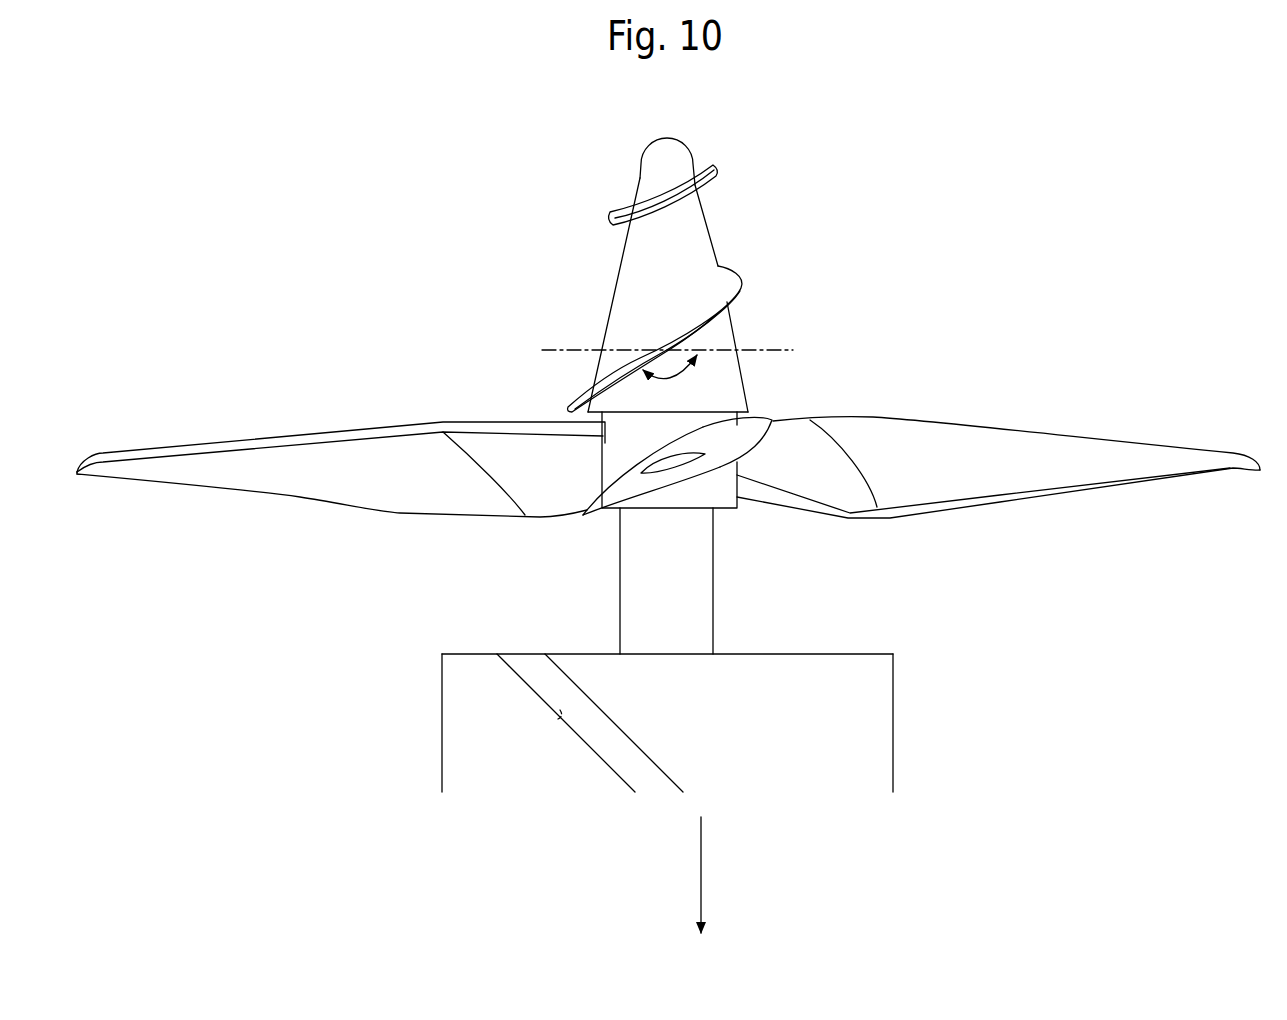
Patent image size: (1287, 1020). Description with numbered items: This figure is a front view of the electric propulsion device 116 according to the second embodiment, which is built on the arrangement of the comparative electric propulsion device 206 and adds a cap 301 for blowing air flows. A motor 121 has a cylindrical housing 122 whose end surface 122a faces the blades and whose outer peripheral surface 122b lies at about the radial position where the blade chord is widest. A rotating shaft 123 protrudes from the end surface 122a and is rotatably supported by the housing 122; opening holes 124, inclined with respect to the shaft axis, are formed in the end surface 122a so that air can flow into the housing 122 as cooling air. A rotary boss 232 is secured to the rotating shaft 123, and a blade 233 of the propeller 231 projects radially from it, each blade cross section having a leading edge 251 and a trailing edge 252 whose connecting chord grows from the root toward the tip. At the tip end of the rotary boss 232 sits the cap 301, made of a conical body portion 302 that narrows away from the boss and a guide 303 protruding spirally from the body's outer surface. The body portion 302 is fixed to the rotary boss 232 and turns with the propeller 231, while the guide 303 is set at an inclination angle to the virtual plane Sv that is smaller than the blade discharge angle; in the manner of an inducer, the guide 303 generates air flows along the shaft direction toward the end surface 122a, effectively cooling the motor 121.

The electric propulsion device 116 is at (908, 232).
The motor 121 is at (882, 652).
The housing 122 is at (830, 693).
The end surface 122a is at (470, 653).
The outer peripheral surface 122b is at (440, 680).
The rotating shaft 123 is at (690, 582).
The opening holes 124 is at (560, 710).
The electric propulsion device 206 is at (930, 367).
The propeller 231 is at (1100, 437).
The rotary boss 232 is at (692, 497).
The blade 233 is at (993, 443).
The leading edge 251 is at (780, 420).
The trailing edge 252 is at (588, 507).
The cap 301 is at (636, 177).
The body portion 302 is at (637, 293).
The guide 303 is at (618, 226).
The virtual plane Sv is at (772, 350).